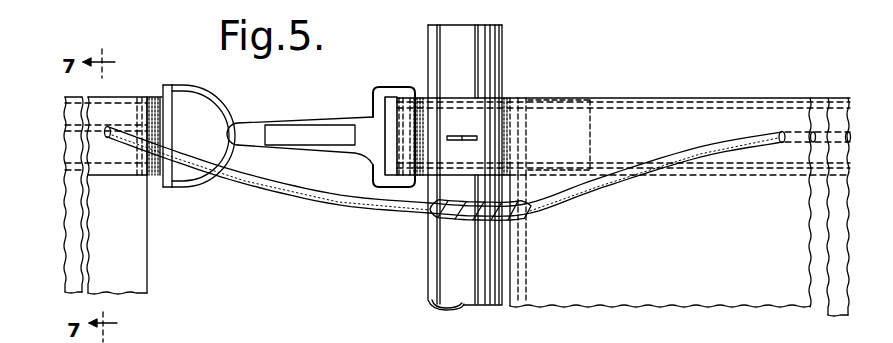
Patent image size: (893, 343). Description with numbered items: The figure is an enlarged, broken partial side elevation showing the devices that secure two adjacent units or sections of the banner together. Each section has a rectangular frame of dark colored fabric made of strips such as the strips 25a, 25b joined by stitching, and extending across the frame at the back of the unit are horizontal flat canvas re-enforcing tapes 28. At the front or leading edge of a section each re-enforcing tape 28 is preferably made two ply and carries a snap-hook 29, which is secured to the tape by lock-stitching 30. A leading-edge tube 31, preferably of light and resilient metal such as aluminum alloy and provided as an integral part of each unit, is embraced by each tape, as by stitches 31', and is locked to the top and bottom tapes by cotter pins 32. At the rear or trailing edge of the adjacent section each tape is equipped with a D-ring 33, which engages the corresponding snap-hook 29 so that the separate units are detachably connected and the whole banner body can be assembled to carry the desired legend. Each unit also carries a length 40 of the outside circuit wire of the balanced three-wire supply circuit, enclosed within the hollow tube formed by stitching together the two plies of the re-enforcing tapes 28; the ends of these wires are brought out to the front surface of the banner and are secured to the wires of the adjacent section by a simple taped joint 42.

The frame strip 25a is at (679, 207).
The frame strip 25b is at (105, 195).
The re-enforcing tape 28 is at (154, 100).
The snap-hook 29 is at (362, 115).
The lock-stitching 30 is at (420, 97).
The leading-edge tube 31 is at (485, 165).
The stitches 31' is at (556, 120).
The cotter pin 32 is at (455, 141).
The D-ring 33 is at (232, 106).
The outside circuit wire 40 is at (288, 190).
The taped joint 42 is at (459, 221).